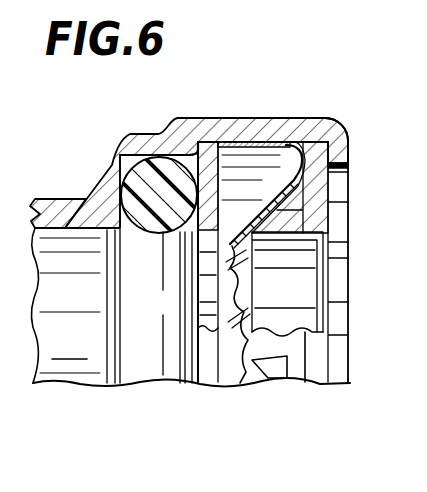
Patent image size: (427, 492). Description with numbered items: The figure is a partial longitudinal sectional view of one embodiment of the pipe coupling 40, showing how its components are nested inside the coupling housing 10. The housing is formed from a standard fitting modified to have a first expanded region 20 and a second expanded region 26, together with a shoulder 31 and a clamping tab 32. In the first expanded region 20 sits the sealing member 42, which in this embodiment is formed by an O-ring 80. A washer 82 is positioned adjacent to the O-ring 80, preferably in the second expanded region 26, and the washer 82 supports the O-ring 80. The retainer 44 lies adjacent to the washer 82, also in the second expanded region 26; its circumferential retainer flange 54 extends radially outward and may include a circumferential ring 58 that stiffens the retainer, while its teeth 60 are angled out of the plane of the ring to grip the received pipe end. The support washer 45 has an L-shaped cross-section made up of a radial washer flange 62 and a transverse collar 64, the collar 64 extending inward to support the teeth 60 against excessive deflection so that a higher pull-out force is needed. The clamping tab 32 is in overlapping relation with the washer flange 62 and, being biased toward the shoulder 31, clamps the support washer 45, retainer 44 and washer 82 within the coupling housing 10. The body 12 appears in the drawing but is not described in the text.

The coupling housing 10 is at (70, 205).
The shaft 12 is at (111, 305).
The first expanded region 20 is at (143, 131).
The second expanded region 26 is at (296, 118).
The shoulder 31 is at (192, 150).
The clamping tab 32 is at (342, 161).
The pipe coupling 40 is at (233, 412).
The sealing member 42 is at (152, 226).
The retainer 44 is at (333, 142).
The support washer 45 is at (288, 300).
The retainer flange 54 is at (281, 142).
The circumferential ring 58 is at (252, 142).
The teeth 60 is at (255, 358).
The washer flange 62 is at (315, 183).
The collar 64 is at (290, 237).
The O-ring 80 is at (152, 182).
The washer 82 is at (208, 303).